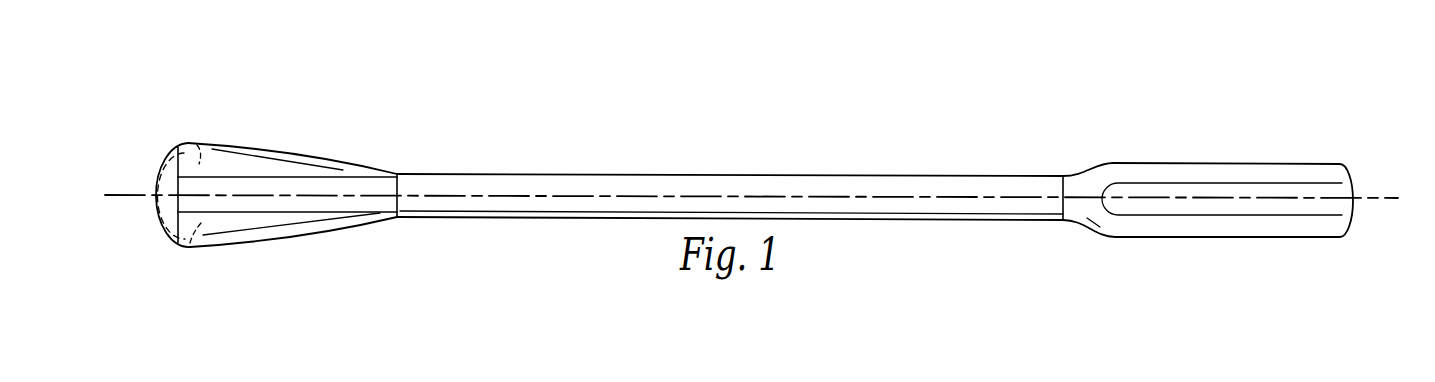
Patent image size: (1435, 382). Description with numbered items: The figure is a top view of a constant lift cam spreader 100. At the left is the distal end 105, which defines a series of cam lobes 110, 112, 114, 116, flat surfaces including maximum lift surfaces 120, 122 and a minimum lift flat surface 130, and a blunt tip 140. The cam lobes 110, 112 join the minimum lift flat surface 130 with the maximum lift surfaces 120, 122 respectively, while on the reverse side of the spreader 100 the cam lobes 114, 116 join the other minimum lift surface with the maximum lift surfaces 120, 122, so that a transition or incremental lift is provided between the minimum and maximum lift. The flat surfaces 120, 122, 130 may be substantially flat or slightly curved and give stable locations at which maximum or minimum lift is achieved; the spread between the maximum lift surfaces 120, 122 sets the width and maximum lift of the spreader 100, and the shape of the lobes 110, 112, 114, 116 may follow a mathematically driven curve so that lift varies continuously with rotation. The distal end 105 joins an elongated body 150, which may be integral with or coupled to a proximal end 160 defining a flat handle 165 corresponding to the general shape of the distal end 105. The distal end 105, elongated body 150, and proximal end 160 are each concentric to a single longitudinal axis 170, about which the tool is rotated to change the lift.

The constant lift cam spreader 100 is at (985, 120).
The distal end 105 is at (150, 117).
The cam lobe 110 is at (266, 163).
The cam lobe 112 is at (265, 223).
The cam lobe 114 is at (190, 247).
The cam lobe 116 is at (192, 144).
The maximum lift flat surface 120 is at (330, 160).
The maximum lift flat surface 122 is at (332, 227).
The minimum lift flat surface 130 is at (235, 202).
The blunt tip 140 is at (165, 213).
The elongated body 150 is at (823, 176).
The proximal end 160 is at (1208, 182).
The handle 165 is at (1262, 223).
The longitudinal axis 170 is at (120, 193).